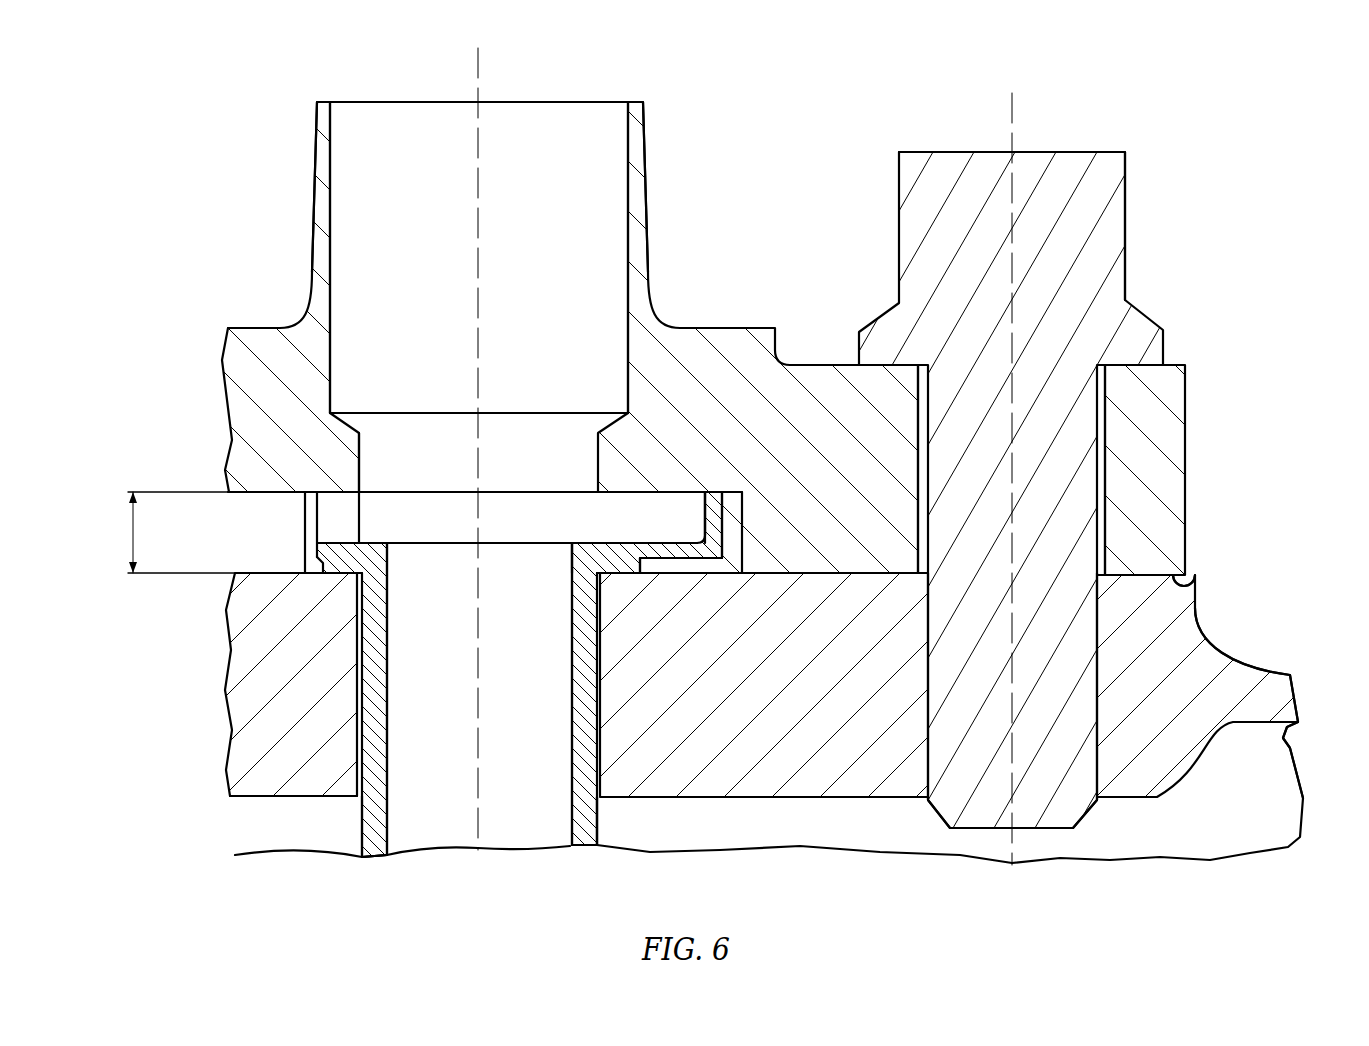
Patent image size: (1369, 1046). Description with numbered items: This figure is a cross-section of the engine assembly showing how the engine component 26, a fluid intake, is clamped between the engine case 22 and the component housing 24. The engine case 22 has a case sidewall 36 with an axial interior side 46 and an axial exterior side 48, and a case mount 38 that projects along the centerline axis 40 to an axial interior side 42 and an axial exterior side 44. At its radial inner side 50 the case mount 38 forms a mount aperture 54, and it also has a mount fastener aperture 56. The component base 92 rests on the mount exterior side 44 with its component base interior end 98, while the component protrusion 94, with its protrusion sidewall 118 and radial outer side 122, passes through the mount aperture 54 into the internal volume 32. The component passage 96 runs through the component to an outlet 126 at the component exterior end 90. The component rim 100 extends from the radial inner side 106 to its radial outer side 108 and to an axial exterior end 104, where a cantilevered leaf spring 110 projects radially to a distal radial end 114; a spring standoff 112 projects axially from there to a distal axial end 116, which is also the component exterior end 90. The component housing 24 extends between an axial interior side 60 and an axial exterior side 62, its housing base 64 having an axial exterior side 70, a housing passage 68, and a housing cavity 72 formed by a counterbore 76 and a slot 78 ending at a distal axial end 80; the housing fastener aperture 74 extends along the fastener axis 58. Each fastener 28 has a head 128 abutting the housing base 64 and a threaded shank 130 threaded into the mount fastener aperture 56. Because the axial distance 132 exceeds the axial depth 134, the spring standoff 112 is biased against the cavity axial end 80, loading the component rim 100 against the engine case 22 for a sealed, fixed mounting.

The engine case 22 is at (208, 712).
The component housing 24 is at (203, 355).
The engine component 26 is at (372, 872).
The fastener 28 is at (1103, 135).
The internal volume 32 is at (268, 830).
The case sidewall 36 is at (1275, 700).
The case mount 38 is at (758, 701).
The centerline axis 40 is at (482, 52).
The axial interior side of the case mount 42 is at (233, 800).
The axial exterior side of the case mount 44 is at (238, 560).
The axial interior side of the case sidewall 46 is at (1290, 748).
The axial exterior side of the case sidewall 48 is at (1283, 665).
The radial inner side of the case mount 50 is at (380, 685).
The mount aperture 54 is at (605, 737).
The mount fastener aperture 56 is at (1102, 660).
The fastener axis 58 is at (1010, 98).
The axial interior side of the component housing 60 is at (1196, 592).
The axial exterior side of the component housing 62 is at (320, 100).
The housing base 64 is at (858, 475).
The housing passage 68 is at (440, 300).
The axial exterior side of the housing base 70 is at (1180, 363).
The housing cavity 72 is at (663, 490).
The housing fastener aperture 74 is at (1110, 448).
The counterbore 76 is at (298, 517).
The slot 78 is at (745, 528).
The distal axial end of the housing cavity 80 is at (632, 510).
The component exterior end 90 is at (710, 490).
The component base 92 is at (700, 576).
The component protrusion 94 is at (600, 822).
The component passage 96 is at (447, 778).
The component base interior end 98 is at (606, 580).
The component rim 100 is at (350, 560).
The axial exterior end of the component rim 104 is at (507, 526).
The radial inner side of the engine component 106 is at (572, 553).
The radial outer side of the component rim 108 is at (648, 578).
The cantilevered leaf spring 110 is at (688, 578).
The spring standoff 112 is at (348, 517).
The distal radial end of the component spring beam 114 is at (742, 565).
The distal axial end of the spring standoff 116 is at (294, 453).
The protrusion sidewall 118 is at (377, 795).
The radial outer side of the component protrusion 122 is at (599, 833).
The outlet 126 is at (450, 553).
The head 128 is at (1078, 238).
The threaded shank 130 is at (978, 673).
The axial distance 132 is at (130, 530).
The axial depth 134 is at (181, 532).